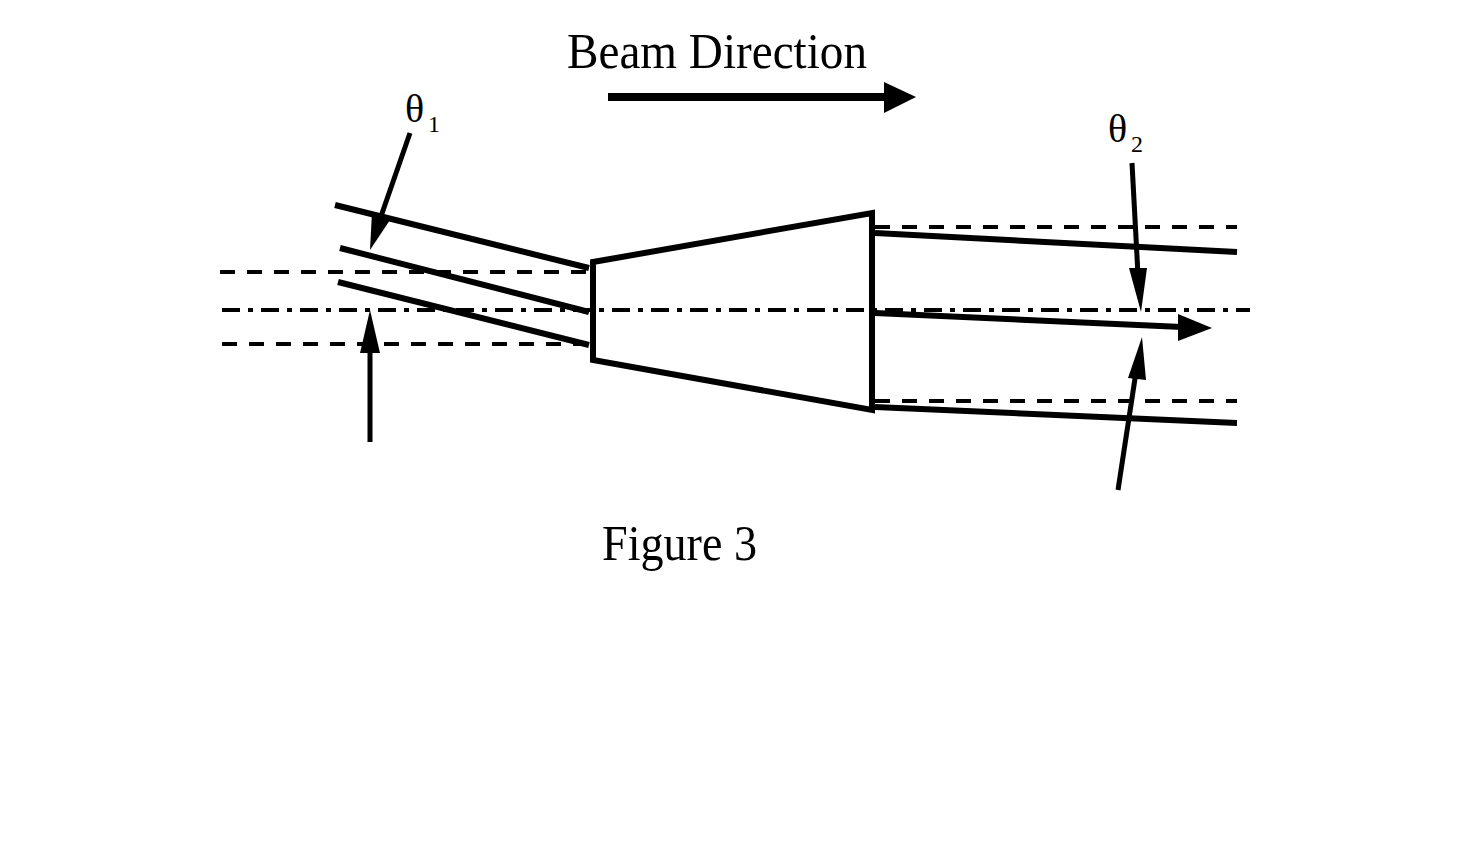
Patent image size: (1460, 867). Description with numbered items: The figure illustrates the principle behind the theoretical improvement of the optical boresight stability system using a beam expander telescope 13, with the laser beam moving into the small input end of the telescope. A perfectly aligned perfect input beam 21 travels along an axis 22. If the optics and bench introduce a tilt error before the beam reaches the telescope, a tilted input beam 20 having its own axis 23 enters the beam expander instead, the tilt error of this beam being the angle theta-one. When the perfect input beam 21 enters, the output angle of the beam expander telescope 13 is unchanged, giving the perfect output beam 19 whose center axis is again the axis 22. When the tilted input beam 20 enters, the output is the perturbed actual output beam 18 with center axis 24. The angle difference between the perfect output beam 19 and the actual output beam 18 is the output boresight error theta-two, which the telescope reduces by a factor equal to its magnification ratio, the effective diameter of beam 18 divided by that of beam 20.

The beam expander telescope 13 is at (720, 275).
The actual output beam 18 is at (1220, 252).
The perfect output beam 19 is at (1202, 225).
The tilted input beam 20 is at (432, 223).
The perfect input beam 21 is at (255, 268).
The axis 22 is at (233, 312).
The axis of tilted input beam 23 is at (355, 247).
The center axis of actual output beam 24 is at (1087, 327).